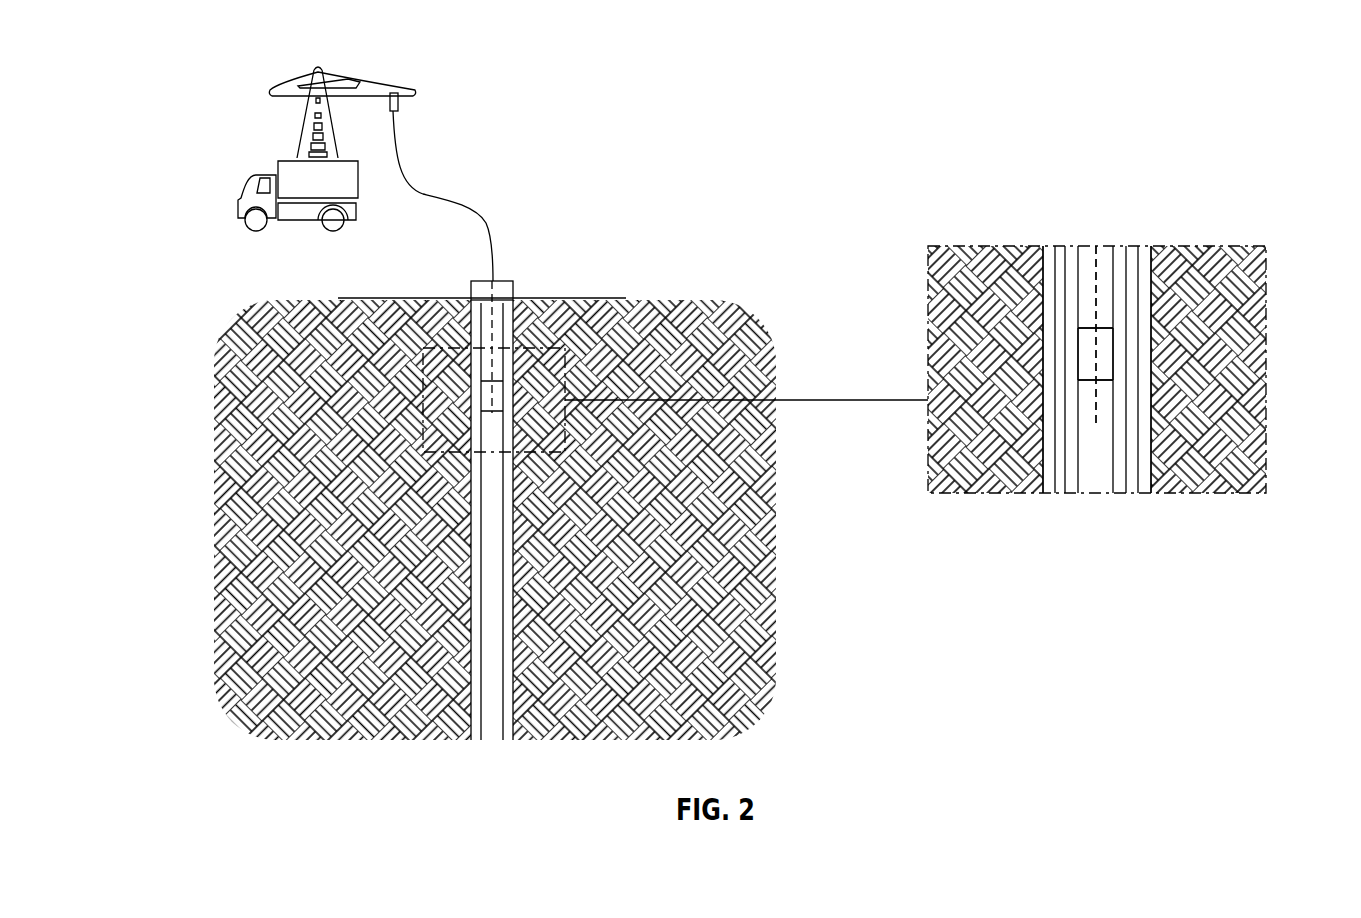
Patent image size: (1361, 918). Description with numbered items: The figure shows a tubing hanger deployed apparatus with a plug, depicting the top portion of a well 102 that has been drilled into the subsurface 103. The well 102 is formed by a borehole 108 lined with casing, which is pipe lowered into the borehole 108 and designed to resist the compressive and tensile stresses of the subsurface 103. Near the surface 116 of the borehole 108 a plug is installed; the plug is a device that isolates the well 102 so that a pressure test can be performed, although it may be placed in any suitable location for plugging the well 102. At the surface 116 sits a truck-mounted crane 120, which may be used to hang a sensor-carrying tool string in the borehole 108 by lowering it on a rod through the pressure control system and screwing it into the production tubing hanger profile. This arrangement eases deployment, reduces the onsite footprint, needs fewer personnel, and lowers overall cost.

The well 102 is at (490, 273).
The subsurface 103 is at (588, 320).
The borehole 108 is at (1143, 490).
The surface 116 is at (400, 290).
The truck-mounted crane 120 is at (230, 195).